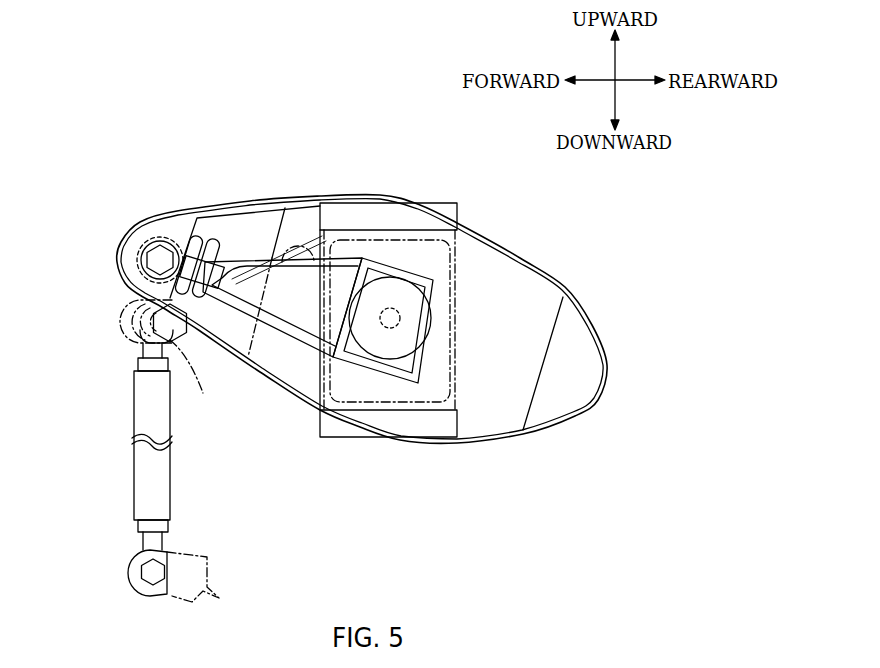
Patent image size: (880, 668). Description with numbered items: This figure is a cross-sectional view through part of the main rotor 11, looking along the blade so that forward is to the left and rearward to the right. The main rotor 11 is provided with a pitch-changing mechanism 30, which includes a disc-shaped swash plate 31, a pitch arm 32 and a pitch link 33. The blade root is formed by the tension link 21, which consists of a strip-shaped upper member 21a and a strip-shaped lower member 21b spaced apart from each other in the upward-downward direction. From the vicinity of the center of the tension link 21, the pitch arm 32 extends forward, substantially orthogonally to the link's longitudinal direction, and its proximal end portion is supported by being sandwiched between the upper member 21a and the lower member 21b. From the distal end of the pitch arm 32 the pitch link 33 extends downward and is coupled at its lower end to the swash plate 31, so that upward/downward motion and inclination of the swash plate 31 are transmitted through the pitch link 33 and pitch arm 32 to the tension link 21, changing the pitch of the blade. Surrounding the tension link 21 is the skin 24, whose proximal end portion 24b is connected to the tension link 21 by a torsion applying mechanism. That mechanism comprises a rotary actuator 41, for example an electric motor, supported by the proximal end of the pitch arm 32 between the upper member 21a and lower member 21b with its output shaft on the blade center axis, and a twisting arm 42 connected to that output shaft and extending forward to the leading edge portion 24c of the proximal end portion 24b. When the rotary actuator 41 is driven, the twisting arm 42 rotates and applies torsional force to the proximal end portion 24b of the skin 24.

The main rotor 11 is at (277, 113).
The tension link 21 is at (369, 293).
The upper member 21a is at (447, 213).
The lower member 21b is at (447, 421).
The skin 24 is at (410, 319).
The proximal end portion of the skin 24b is at (563, 283).
The leading edge portion 24c is at (166, 212).
The pitch-changing mechanism 30 is at (102, 300).
The swash plate 31 is at (186, 560).
The pitch arm 32 is at (172, 340).
The pitch link 33 is at (143, 403).
The rotary actuator 41 is at (418, 317).
The twisting arm 42 is at (298, 250).